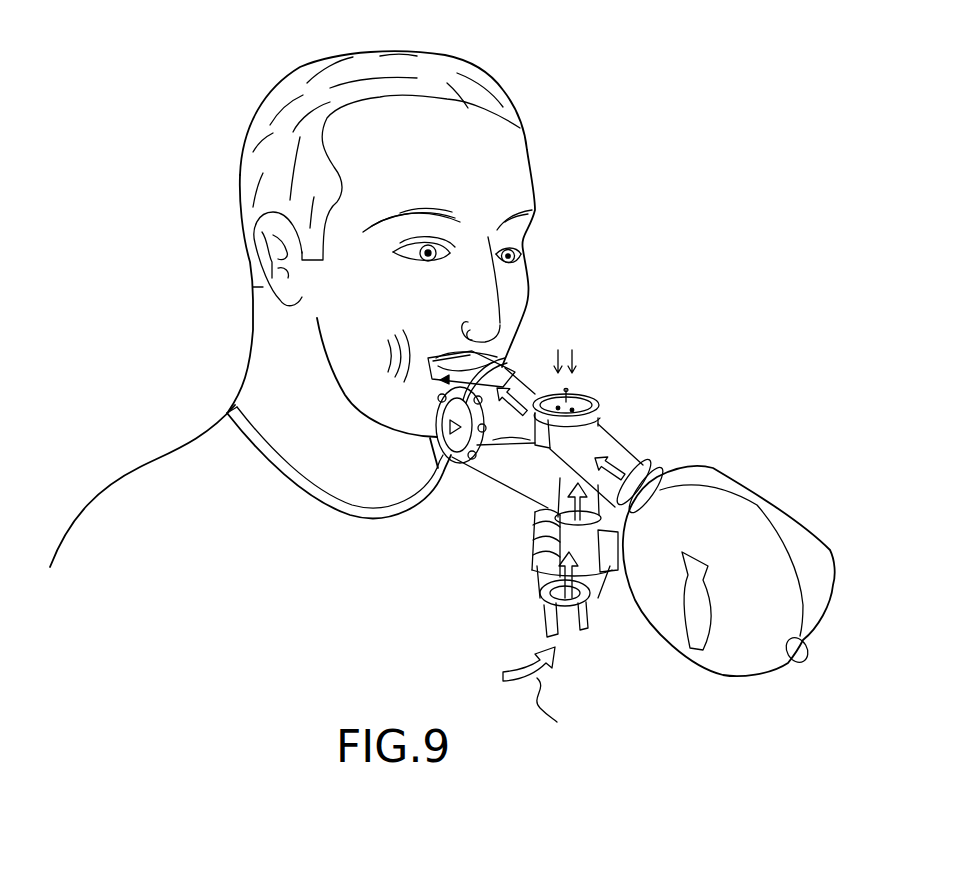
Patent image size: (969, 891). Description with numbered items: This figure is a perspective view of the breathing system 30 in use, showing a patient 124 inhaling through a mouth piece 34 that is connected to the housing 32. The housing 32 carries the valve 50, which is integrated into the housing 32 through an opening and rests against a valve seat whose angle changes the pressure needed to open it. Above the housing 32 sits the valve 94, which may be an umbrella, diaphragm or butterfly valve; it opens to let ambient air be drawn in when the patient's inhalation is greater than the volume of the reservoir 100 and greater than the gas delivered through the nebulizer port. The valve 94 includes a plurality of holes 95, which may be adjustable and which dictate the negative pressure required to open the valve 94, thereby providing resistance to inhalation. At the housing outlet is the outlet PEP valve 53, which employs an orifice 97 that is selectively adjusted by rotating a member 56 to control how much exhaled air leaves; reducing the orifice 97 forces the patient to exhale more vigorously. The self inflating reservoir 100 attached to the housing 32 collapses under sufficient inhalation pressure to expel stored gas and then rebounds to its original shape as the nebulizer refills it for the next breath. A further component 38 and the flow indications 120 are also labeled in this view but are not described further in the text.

The user / patient head 124 is at (467, 62).
The breathing system 30 is at (637, 333).
The mouthpiece 34 is at (445, 378).
The orifice 97 is at (447, 428).
The member 56 is at (500, 372).
The housing 32 is at (612, 447).
The valve 50 is at (567, 437).
The valve 94 is at (570, 392).
The holes 95 is at (582, 404).
The outlet PEP valve 53 is at (493, 440).
The inlet valve branch 38 is at (540, 578).
The reservoir 100 is at (718, 468).
The air flow direction 120 is at (727, 673).